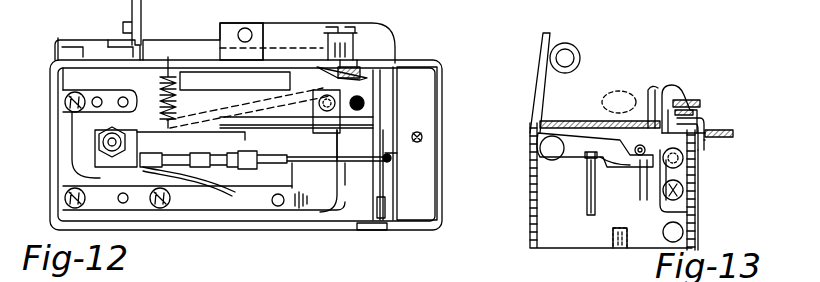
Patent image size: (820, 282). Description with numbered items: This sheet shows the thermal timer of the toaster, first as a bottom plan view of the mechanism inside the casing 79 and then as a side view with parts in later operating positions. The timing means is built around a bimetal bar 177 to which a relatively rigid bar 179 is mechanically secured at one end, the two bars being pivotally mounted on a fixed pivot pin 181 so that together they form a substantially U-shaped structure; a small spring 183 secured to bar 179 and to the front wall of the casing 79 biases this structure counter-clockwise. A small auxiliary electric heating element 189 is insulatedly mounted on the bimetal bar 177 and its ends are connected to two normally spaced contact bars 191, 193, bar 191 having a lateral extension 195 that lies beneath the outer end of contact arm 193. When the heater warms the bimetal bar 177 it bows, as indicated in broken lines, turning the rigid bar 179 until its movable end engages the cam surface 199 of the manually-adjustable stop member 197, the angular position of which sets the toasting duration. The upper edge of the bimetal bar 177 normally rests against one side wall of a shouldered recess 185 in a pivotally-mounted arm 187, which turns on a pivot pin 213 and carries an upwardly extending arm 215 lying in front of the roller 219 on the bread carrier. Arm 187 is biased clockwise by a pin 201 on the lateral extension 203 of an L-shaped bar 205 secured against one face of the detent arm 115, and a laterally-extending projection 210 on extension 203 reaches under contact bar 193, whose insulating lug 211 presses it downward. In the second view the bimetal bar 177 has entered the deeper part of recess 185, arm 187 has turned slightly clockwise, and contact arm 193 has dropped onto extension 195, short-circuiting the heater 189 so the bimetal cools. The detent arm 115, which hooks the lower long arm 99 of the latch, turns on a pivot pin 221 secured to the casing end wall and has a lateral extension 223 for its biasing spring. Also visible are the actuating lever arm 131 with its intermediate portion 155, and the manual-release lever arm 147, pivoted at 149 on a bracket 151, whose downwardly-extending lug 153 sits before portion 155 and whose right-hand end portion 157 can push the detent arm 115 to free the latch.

In FIG. 12, the casing 79 is at (50, 98).
In FIG. 13, the casing 79 is at (530, 207).
In FIG. 12, the lower long arm 99 is at (398, 143).
In FIG. 13, the lower long arm 99 is at (693, 107).
In FIG. 13, the detent arm 115 is at (678, 87).
In FIG. 12, the actuating lever arm 131 is at (109, 36).
In FIG. 12, the lever arm 147 is at (323, 23).
In FIG. 13, the lever arm 147 is at (715, 125).
In FIG. 12, the pivot 149 is at (258, 23).
In FIG. 12, the bracket 151 is at (285, 18).
In FIG. 12, the downwardly-extending lug 153 is at (125, 18).
In FIG. 12, the intermediate portion 155 is at (62, 33).
In FIG. 12, the right-hand end portion 157 is at (393, 53).
In FIG. 12, the bimetal bar 177 is at (347, 157).
In FIG. 13, the bimetal bar 177 is at (587, 192).
In FIG. 12, the rigid bar 179 is at (222, 137).
In FIG. 13, the rigid bar 179 is at (675, 177).
In FIG. 12, the pivot pin 181 is at (98, 140).
In FIG. 12, the spring 183 is at (158, 78).
In FIG. 12, the shouldered recess 185 is at (393, 165).
In FIG. 13, the shouldered recess 185 is at (600, 160).
In FIG. 13, the pivotally-mounted arm 187 is at (585, 137).
In FIG. 12, the auxiliary electric heating element 189 is at (199, 176).
In FIG. 12, the contact bar 191 is at (257, 213).
In FIG. 12, the contact bar 193 is at (215, 92).
In FIG. 12, the lateral extension 195 is at (340, 175).
In FIG. 12, the manually-adjustable stop member 197 is at (357, 43).
In FIG. 12, the cam surface 199 is at (292, 80).
In FIG. 13, the pin 201 is at (619, 102).
In FIG. 13, the lateral extension 203 is at (663, 93).
In FIG. 13, the bar 205 is at (690, 212).
In FIG. 12, the laterally-extending projection 210 is at (363, 101).
In FIG. 13, the laterally-extending projection 210 is at (633, 188).
In FIG. 12, the lug 211 is at (370, 110).
In FIG. 12, the pivot pin 213 is at (378, 208).
In FIG. 13, the pivot pin 213 is at (537, 155).
In FIG. 12, the upwardly extending arm 215 is at (373, 230).
In FIG. 13, the upwardly extending arm 215 is at (540, 72).
In FIG. 13, the roller 219 is at (580, 47).
In FIG. 13, the pivot pin 221 is at (677, 233).
In FIG. 12, the lateral extension 223 is at (394, 147).
In FIG. 13, the lateral extension 223 is at (617, 250).